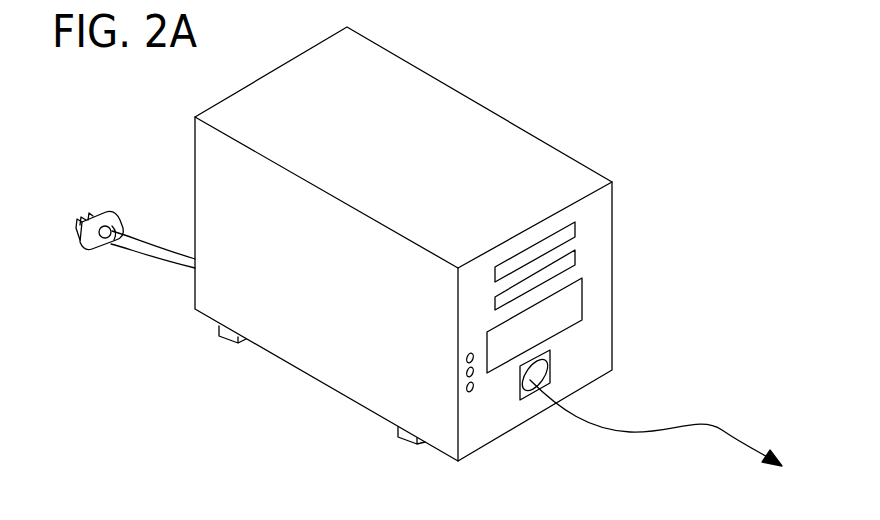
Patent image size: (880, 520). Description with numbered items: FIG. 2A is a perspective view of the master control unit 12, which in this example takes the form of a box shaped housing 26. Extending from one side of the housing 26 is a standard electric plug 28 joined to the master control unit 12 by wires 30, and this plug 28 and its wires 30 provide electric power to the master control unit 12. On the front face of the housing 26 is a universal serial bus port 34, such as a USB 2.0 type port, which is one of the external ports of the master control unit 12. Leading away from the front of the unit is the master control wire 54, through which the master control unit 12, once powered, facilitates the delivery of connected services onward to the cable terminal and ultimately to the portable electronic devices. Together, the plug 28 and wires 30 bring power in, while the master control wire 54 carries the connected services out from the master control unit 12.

The master control unit 12 is at (534, 96).
The box shaped housing 26 is at (310, 357).
The standard electric plug 28 is at (90, 246).
The wires 30 is at (147, 258).
The universal serial bus port 34 is at (533, 388).
The master control wire 54 is at (630, 432).